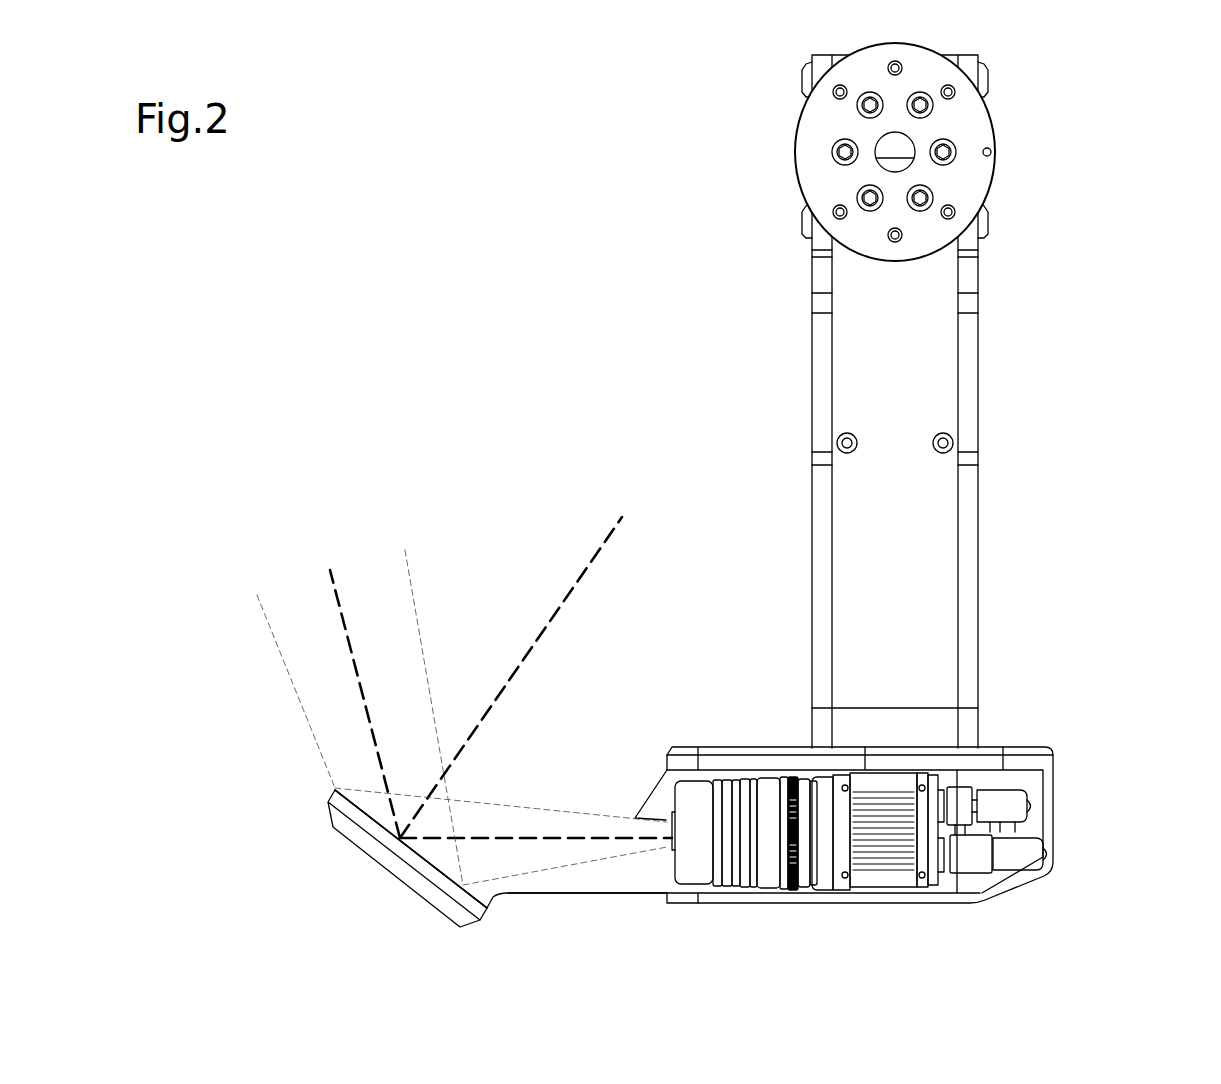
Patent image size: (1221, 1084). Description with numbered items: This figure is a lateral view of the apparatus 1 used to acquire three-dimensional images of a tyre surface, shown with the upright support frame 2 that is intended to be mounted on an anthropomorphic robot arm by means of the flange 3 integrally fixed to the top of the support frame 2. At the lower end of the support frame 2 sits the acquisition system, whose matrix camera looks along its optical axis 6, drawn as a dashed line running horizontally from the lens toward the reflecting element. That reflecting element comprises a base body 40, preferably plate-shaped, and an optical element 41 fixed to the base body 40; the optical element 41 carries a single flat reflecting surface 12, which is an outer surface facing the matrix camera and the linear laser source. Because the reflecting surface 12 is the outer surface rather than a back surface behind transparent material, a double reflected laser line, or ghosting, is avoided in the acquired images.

The apparatus 1 is at (560, 363).
The support frame 2 is at (1040, 512).
The flange 3 is at (1010, 133).
The optical axis 6 is at (560, 837).
The reflecting surface 12 is at (367, 813).
The base body 40 is at (363, 838).
The optical element 41 is at (417, 857).